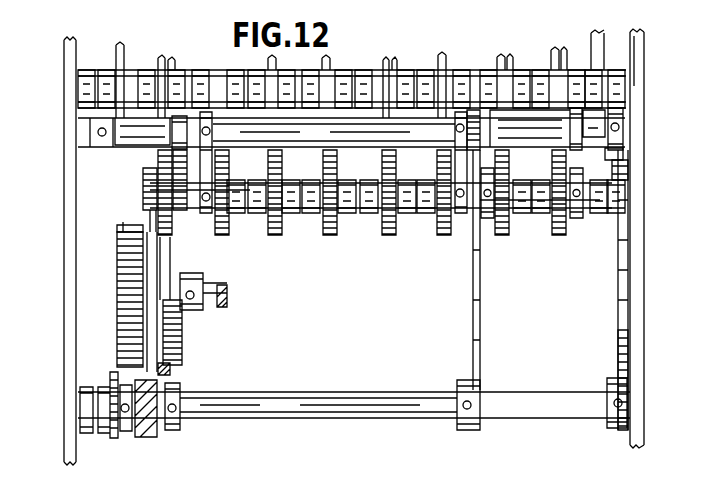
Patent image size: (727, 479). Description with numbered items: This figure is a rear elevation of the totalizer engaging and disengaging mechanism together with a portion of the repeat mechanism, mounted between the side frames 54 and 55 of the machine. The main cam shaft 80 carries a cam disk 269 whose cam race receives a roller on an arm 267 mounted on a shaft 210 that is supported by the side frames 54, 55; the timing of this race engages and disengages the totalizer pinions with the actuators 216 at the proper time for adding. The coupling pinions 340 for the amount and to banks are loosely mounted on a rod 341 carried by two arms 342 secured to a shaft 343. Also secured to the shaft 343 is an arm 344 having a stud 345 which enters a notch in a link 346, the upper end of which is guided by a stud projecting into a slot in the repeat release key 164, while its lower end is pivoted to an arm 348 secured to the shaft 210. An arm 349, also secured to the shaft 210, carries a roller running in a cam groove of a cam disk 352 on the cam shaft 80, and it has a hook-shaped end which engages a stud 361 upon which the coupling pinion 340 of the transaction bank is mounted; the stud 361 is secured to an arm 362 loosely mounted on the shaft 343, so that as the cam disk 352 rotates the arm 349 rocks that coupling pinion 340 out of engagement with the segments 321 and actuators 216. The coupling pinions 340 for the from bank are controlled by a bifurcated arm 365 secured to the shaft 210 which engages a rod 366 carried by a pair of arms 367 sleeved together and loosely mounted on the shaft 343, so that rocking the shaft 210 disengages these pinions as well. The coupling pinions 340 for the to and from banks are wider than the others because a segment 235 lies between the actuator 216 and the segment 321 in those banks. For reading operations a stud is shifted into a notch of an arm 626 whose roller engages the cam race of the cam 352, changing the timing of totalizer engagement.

The side frame 54 is at (635, 250).
The side frame 55 is at (72, 172).
The cam shaft 80 is at (220, 290).
The repeat release key 164 is at (628, 48).
The shaft 210 is at (257, 403).
The actuator 216 is at (392, 62).
The segment 235 is at (443, 60).
The arm 267 is at (163, 370).
The cam disk 269 is at (175, 345).
The segment 321 is at (380, 62).
The coupling pinion 340 is at (510, 225).
The rod 341 is at (417, 217).
The arm 342 is at (458, 164).
The shaft 343 is at (347, 130).
The arm 344 is at (615, 155).
The stud 345 is at (622, 173).
The link 346 is at (620, 227).
The arm 348 is at (630, 350).
The arm 349 is at (110, 335).
The cam disk 352 is at (132, 232).
The stud 361 is at (143, 183).
The arm 362 is at (177, 214).
The arm 365 is at (480, 307).
The rod 366 is at (467, 220).
The arm 367 is at (578, 217).
The arm 626 is at (150, 322).